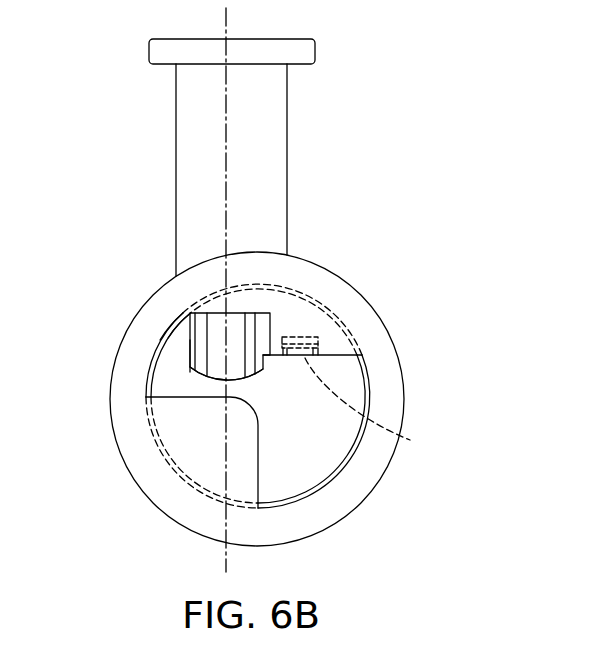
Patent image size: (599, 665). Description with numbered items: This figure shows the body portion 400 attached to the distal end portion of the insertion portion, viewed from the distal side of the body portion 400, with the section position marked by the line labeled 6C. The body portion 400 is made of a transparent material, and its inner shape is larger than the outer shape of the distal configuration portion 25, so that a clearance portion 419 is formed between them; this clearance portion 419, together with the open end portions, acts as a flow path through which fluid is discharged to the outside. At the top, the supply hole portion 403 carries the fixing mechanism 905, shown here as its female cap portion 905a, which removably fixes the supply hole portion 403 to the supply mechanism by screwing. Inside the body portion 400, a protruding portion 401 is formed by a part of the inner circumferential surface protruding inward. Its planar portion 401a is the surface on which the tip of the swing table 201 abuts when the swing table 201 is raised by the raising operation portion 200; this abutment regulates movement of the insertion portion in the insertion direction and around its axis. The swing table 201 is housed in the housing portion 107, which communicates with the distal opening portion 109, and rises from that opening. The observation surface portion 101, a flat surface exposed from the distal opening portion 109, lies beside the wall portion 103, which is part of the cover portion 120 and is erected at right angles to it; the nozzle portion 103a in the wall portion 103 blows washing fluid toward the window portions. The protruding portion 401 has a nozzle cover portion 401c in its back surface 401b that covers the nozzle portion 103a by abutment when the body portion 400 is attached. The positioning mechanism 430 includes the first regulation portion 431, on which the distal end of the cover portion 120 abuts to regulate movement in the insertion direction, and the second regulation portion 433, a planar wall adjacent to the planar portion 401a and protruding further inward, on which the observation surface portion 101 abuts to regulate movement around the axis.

The section line 6C is at (236, 21).
The fixing mechanism 905 is at (288, 52).
The female cap portion 905a is at (305, 52).
The supply hole portion 403 is at (289, 163).
The body portion 400 is at (325, 399).
The observation surface portion 101 is at (366, 412).
The positioning mechanism 430 is at (296, 413).
The first regulation portion 431 is at (195, 456).
The second regulation portion 433 is at (332, 355).
The clearance portion 419 is at (348, 466).
The distal configuration portion 25 is at (330, 461).
The cover portion 120 is at (306, 472).
The protruding portion 401 is at (233, 305).
The planar portion 401a is at (180, 355).
The back surface 401b is at (290, 310).
The nozzle cover portion 401c is at (320, 337).
The nozzle portion 103a is at (305, 358).
The wall portion 103 is at (336, 350).
The distal opening portion 109 is at (185, 318).
The housing portion 107 is at (187, 325).
The raising operation portion 200 is at (152, 422).
The swing table 201 is at (212, 370).